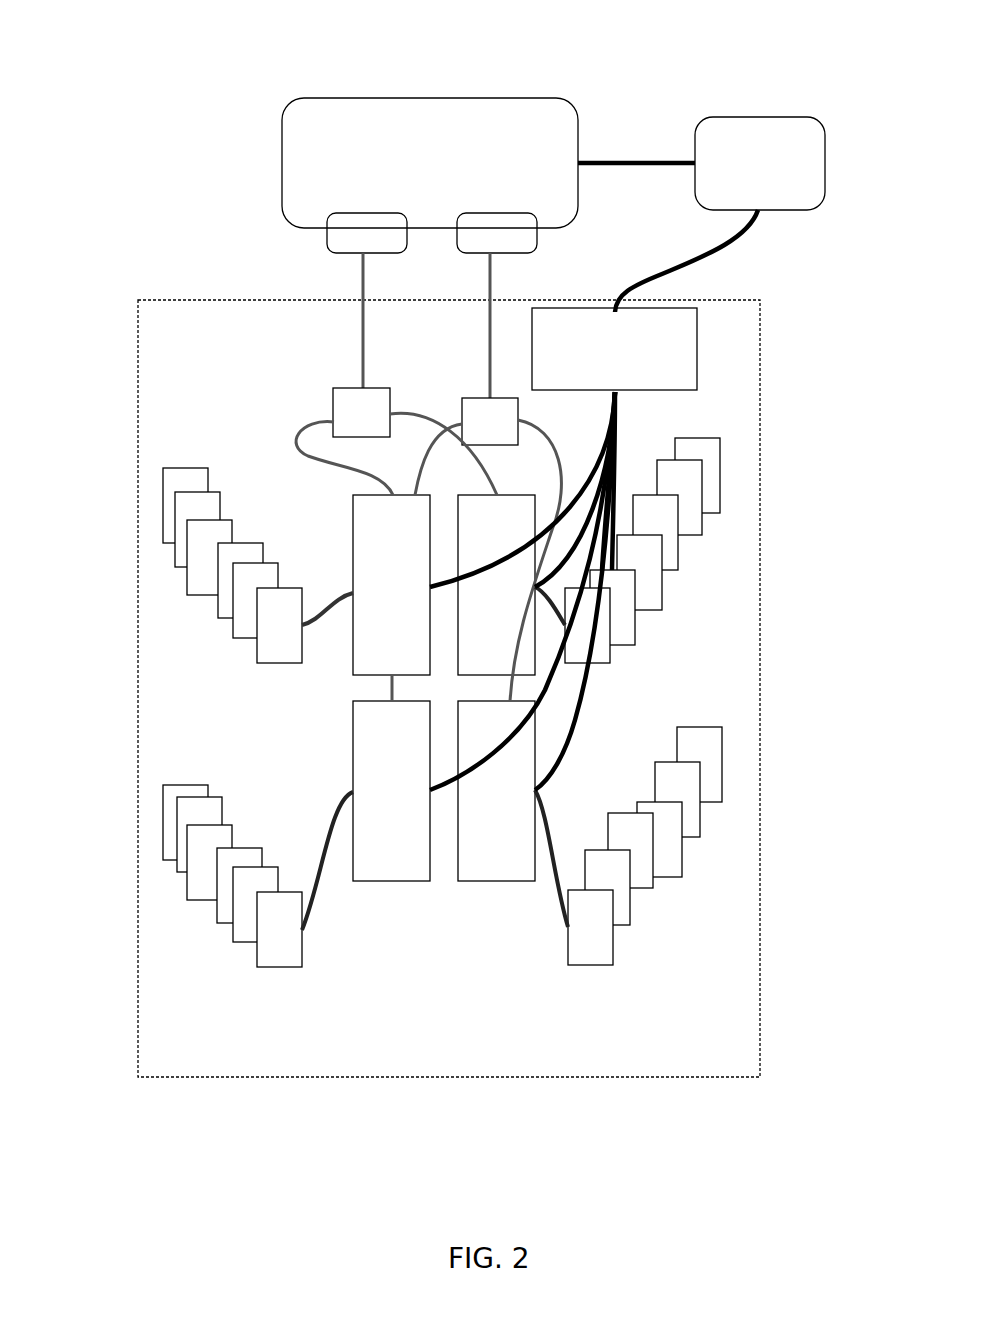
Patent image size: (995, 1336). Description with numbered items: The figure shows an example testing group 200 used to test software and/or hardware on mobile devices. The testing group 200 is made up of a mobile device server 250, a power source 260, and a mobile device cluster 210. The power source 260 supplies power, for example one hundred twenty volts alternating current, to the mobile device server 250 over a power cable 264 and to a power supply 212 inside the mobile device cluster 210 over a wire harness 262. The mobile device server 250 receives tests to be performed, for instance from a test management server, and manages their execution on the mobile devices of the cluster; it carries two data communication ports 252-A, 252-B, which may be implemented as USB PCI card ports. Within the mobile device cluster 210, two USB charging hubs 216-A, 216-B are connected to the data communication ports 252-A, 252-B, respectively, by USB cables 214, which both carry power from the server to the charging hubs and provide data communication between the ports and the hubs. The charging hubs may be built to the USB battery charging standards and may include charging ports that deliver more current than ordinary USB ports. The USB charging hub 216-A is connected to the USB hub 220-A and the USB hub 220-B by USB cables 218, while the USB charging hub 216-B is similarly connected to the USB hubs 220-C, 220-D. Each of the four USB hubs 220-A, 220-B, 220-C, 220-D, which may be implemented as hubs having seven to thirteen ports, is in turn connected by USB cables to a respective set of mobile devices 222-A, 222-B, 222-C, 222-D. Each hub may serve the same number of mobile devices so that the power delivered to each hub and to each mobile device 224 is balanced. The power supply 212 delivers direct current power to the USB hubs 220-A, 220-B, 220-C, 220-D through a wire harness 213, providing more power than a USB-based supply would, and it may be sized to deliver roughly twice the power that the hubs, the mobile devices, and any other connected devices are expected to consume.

The testing group 200 is at (137, 57).
The mobile device cluster 210 is at (449, 688).
The power supply 212 is at (614, 349).
The wire harness 213 is at (628, 431).
The USB cables 214 is at (343, 328).
The USB charging hub 216-A is at (318, 405).
The USB charging hub 216-B is at (528, 405).
The USB cables 218 is at (283, 445).
The USB hub 220-A is at (391, 585).
The USB hub 220-B is at (496, 585).
The USB hub 220-C is at (391, 791).
The USB hub 220-D is at (496, 791).
The set of mobile devices 222-A is at (160, 572).
The set of mobile devices 222-B is at (720, 536).
The set of mobile devices 222-C is at (168, 898).
The set of mobile devices 222-D is at (700, 864).
The mobile device 224 is at (323, 815).
The mobile device server 250 is at (430, 163).
The data communication port 252-A is at (318, 240).
The data communication port 252-B is at (442, 253).
The power source 260 is at (760, 163).
The wire harness 262 is at (763, 241).
The power cable 264 is at (632, 145).